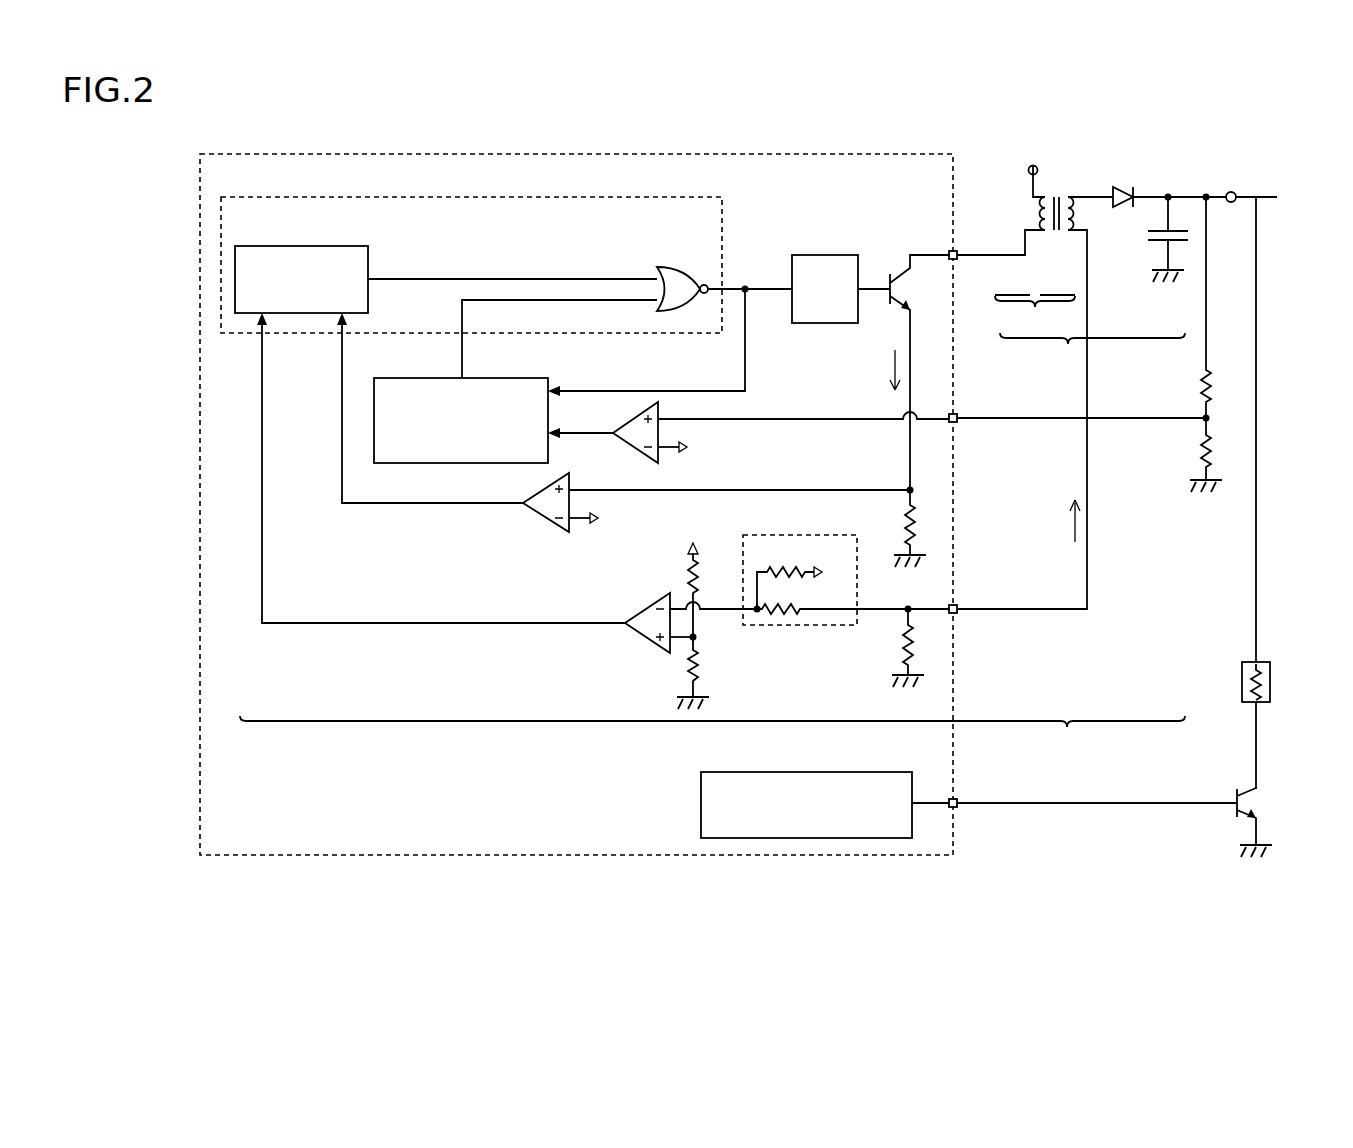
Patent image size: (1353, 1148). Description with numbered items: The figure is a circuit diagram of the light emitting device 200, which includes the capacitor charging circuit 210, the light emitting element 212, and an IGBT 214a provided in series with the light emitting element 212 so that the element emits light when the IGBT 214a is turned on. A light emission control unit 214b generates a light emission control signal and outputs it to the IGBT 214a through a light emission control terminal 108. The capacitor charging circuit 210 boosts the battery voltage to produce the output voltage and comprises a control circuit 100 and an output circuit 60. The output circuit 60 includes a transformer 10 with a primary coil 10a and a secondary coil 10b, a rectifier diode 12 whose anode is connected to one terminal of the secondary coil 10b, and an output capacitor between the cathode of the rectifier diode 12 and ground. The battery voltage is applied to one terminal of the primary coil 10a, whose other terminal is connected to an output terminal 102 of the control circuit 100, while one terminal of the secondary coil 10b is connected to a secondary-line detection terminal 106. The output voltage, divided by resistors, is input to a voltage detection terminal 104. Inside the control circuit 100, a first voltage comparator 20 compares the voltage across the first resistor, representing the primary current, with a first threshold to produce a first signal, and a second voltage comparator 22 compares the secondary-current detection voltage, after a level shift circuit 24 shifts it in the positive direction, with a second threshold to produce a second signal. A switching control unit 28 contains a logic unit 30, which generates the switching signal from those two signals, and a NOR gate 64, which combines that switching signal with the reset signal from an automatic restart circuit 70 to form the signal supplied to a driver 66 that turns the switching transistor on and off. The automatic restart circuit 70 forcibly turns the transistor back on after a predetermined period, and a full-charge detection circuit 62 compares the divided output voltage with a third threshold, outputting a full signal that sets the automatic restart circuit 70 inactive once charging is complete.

The light emitting device 200 is at (792, 926).
The control circuit 100 is at (415, 855).
The switching control unit 28 is at (635, 197).
The logic unit 30 is at (330, 246).
The NOR gate 64 is at (673, 267).
The driver 66 is at (835, 255).
The automatic restart circuit 70 is at (495, 378).
The full-charge detection circuit 62 is at (632, 450).
The first voltage comparator 20 is at (543, 518).
The second voltage comparator 22 is at (645, 640).
The level shift circuit 24 is at (775, 535).
The output terminal 102 is at (957, 250).
The voltage detection terminal 104 is at (957, 413).
The secondary-line detection terminal 106 is at (957, 604).
The light emission control terminal 108 is at (957, 798).
The output circuit 60 is at (1117, 374).
The transformer 10 is at (1022, 403).
The primary coil 10a is at (1045, 235).
The secondary coil 10b is at (1068, 235).
The rectifier diode 12 is at (1123, 187).
The capacitor charging circuit 210 is at (756, 527).
The light emitting element 212 is at (1244, 662).
The IGBT 214a is at (1235, 818).
The light emission control unit 214b is at (890, 758).